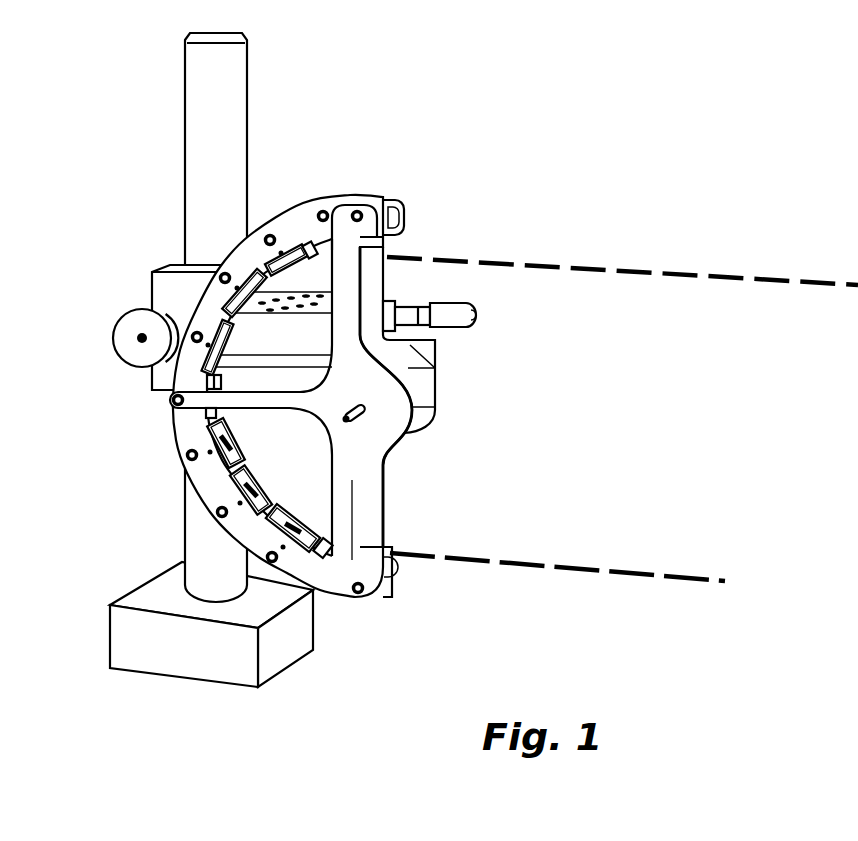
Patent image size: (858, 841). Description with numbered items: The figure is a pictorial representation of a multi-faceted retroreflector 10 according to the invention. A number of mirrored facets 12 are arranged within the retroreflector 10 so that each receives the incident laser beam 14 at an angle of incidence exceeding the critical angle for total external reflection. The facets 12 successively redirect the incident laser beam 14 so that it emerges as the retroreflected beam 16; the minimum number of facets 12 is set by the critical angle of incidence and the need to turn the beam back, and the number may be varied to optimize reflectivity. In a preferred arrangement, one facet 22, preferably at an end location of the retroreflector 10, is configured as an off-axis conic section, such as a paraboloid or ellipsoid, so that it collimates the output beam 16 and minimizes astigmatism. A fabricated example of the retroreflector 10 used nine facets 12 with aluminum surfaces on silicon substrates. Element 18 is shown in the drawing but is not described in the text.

The retroreflector 10 is at (214, 265).
The mirrored facets 12 is at (292, 513).
The incident laser beam 14 is at (517, 560).
The retroreflected beam 16 is at (657, 271).
The sensor pad 18 is at (242, 438).
The facet 22 is at (327, 250).